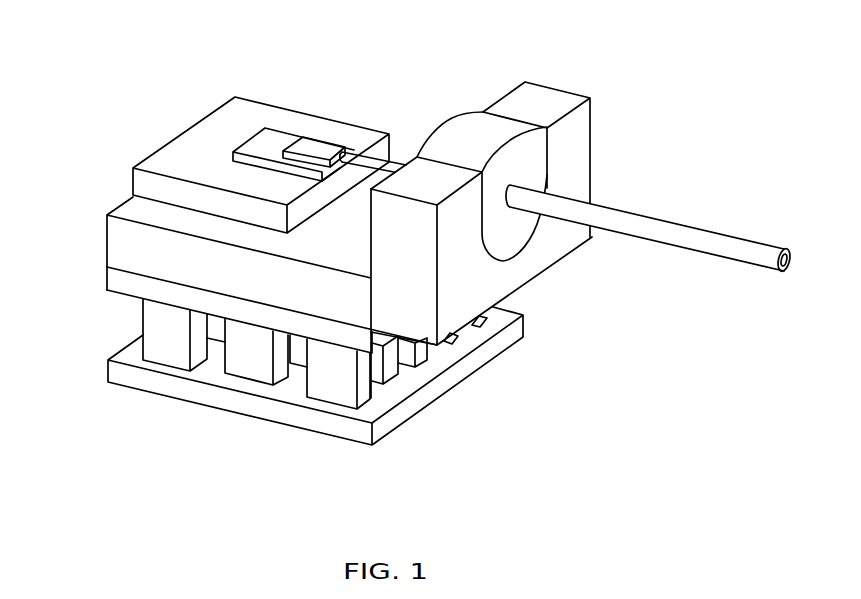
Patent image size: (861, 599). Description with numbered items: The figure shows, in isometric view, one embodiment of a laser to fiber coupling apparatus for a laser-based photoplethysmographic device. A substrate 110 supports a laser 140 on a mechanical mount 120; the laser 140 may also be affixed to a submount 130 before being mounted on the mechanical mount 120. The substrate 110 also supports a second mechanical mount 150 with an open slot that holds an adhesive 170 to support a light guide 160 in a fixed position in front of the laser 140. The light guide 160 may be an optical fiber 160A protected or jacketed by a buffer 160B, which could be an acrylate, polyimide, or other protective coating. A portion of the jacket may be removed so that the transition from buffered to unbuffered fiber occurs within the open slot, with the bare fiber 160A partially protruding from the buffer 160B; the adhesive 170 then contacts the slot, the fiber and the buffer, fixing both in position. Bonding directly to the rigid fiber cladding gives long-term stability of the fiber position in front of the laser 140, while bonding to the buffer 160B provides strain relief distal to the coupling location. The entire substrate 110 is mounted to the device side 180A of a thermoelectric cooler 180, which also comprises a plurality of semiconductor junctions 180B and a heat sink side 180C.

The substrate 110 is at (121, 240).
The mechanical mount 120 is at (147, 187).
The submount 130 is at (258, 147).
The laser 140 is at (317, 150).
The second mechanical mount 150 is at (503, 188).
The light guide 160 is at (576, 152).
The optical fiber 160A is at (392, 168).
The buffer 160B is at (717, 240).
The adhesive 170 is at (505, 233).
The thermoelectric cooler 180 is at (304, 373).
The device side 180A is at (143, 285).
The semiconductor junctions 180B is at (335, 375).
The heat sink side 180C is at (345, 425).